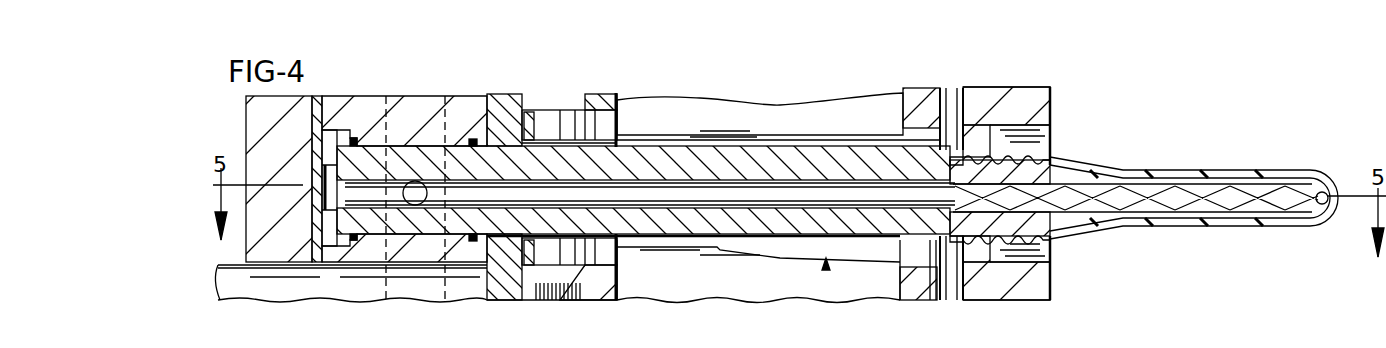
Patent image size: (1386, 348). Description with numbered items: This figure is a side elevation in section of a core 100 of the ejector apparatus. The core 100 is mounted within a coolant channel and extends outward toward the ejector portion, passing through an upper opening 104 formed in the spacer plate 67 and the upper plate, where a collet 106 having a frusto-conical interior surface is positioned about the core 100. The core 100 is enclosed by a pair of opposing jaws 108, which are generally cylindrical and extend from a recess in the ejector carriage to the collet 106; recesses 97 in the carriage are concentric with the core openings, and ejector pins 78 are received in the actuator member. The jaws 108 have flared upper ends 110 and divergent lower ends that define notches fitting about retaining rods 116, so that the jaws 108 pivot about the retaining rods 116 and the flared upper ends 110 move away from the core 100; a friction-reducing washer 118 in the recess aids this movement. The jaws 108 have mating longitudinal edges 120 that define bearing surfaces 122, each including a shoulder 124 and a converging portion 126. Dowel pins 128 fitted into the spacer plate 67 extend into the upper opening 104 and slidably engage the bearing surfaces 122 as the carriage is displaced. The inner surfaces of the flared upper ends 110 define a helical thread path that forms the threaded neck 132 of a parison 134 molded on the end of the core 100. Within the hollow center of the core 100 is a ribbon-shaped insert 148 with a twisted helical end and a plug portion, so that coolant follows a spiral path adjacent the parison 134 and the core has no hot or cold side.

The spacer plate 67 is at (927, 292).
The ejector pins 78 is at (408, 287).
The recesses 97 is at (606, 122).
The core 100 is at (1250, 221).
The upper opening 104 is at (917, 130).
The collet 106 is at (1053, 126).
The jaws 108 is at (1053, 258).
The flared upper ends 110 is at (1030, 305).
The retaining rods 116 is at (597, 130).
The washer 118 is at (555, 253).
The mating longitudinal edges 120 is at (826, 268).
The bearing surfaces 122 is at (778, 287).
The shoulder 124 is at (912, 285).
The converging portion 126 is at (720, 250).
The dowel pins 128 is at (952, 112).
The threaded neck 132 is at (1053, 138).
The parison 134 is at (1253, 168).
The ribbon-shaped insert 148 is at (729, 196).